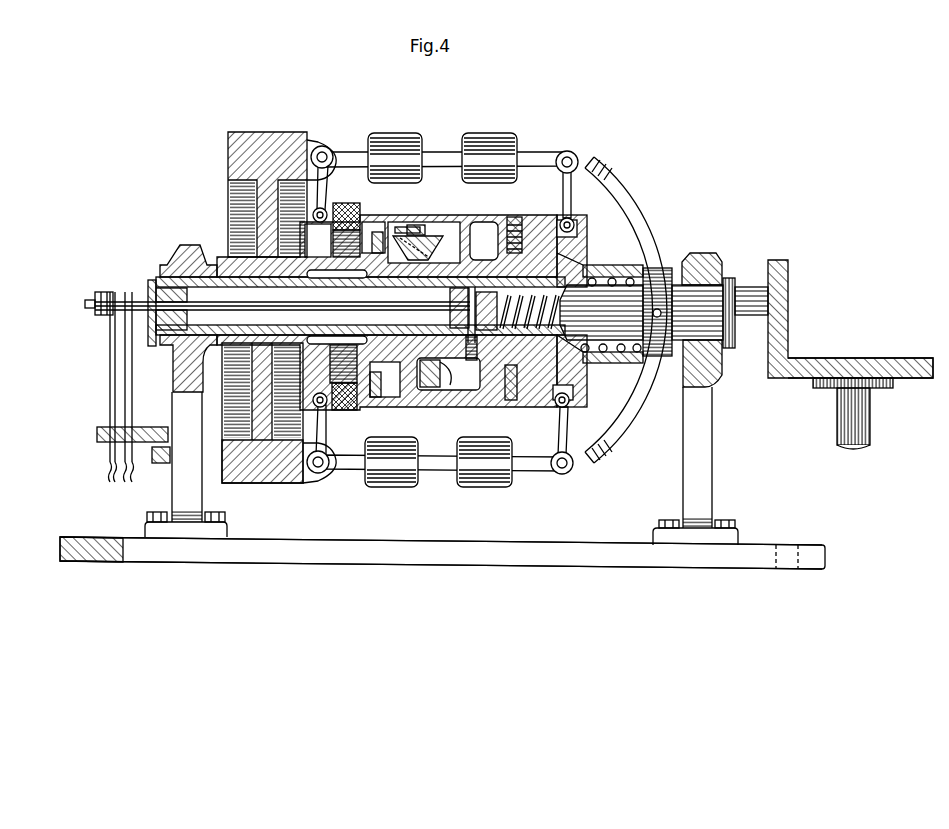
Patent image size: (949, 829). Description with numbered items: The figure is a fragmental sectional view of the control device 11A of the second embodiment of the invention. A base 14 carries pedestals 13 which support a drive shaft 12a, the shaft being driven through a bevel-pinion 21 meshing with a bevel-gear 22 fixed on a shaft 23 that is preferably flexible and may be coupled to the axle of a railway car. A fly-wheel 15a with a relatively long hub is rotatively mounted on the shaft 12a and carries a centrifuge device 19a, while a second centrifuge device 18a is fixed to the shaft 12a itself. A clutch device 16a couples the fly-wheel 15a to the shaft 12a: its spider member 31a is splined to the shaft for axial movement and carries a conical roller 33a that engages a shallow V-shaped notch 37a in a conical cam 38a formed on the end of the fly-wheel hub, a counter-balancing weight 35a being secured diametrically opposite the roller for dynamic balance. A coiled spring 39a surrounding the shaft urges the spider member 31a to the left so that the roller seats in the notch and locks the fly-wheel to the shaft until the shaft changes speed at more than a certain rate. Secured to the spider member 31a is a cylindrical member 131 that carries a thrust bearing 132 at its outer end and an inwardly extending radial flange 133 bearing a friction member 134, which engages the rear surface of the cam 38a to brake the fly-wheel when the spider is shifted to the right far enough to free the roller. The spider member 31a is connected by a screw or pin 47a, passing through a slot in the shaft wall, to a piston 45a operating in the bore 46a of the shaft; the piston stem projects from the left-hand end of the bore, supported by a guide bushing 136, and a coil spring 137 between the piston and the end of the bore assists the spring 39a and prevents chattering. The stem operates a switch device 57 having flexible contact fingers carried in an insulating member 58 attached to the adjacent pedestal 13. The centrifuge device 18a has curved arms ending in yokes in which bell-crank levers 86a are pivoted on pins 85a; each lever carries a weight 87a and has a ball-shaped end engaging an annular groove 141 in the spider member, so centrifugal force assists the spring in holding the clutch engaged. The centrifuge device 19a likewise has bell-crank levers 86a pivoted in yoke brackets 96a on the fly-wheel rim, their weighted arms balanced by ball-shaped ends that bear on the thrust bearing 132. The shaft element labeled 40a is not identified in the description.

The control device 11A is at (357, 566).
The drive shaft 12a is at (733, 276).
The pedestal 13 is at (185, 499).
The base 14 is at (470, 548).
The fly-wheel 15a is at (240, 152).
The clutch device 16a is at (443, 243).
The centrifuge device 18a is at (647, 215).
The centrifuge device 19a is at (357, 147).
The bevel-pinion 21 is at (784, 320).
The bevel-gear 22 is at (852, 362).
The shaft 23 is at (871, 425).
The spider member 31a is at (585, 258).
The conical roller 33a is at (483, 241).
The counter-balancing weight 35a is at (442, 373).
The V-shaped notch 37a is at (329, 303).
The conical cam 38a is at (396, 398).
The coiled spring 39a is at (613, 279).
The shaft 40a is at (310, 290).
The piston 45a is at (460, 300).
The bore 46a is at (254, 314).
The screw or pin 47a is at (462, 323).
The switch device 57 is at (111, 387).
The insulating member 58 is at (97, 437).
The pin 85a is at (322, 146).
The bell-crank lever 86a is at (330, 170).
The weight 87a is at (470, 153).
The yoke bracket 96a is at (312, 152).
The cylindrical member 131 is at (418, 404).
The thrust bearing 132 is at (346, 222).
The radial flange 133 is at (383, 236).
The friction member 134 is at (410, 240).
The guide bushing 136 is at (153, 290).
The coil spring 137 is at (582, 379).
The annular groove 141 is at (580, 223).